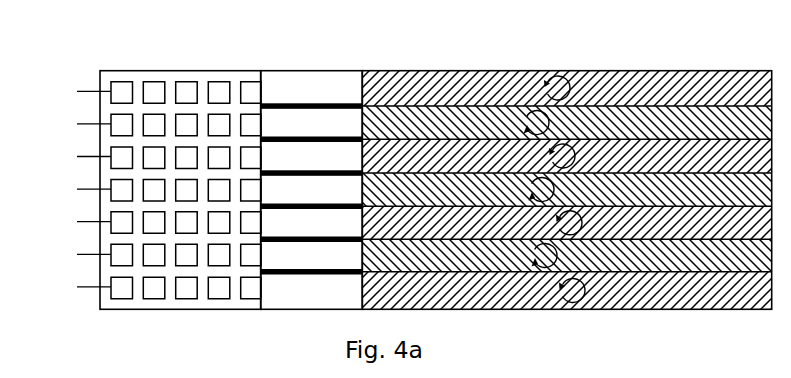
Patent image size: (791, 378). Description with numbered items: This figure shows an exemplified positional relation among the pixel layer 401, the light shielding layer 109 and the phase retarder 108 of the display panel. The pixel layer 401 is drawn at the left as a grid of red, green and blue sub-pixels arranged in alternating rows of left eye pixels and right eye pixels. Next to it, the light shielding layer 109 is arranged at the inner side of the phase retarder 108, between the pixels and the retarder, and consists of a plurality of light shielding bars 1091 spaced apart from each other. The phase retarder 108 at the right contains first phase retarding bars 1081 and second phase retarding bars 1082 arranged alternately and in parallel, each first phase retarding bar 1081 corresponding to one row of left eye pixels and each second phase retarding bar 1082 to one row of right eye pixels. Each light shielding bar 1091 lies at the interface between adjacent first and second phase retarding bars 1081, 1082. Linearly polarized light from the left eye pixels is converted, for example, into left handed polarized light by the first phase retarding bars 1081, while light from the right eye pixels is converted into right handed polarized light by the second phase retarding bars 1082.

The pixel layer 401 is at (138, 71).
The light shielding layer 109 is at (288, 71).
The light shielding bars 1091 is at (339, 103).
The phase retarder 108 is at (566, 164).
The first phase retarding bars 1081 is at (615, 90).
The second phase retarding bars 1082 is at (702, 125).